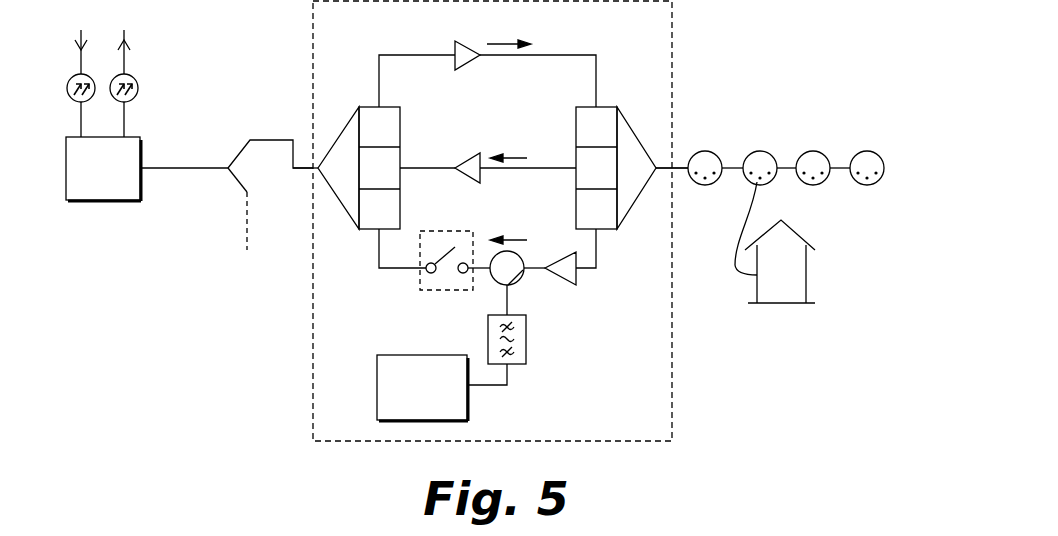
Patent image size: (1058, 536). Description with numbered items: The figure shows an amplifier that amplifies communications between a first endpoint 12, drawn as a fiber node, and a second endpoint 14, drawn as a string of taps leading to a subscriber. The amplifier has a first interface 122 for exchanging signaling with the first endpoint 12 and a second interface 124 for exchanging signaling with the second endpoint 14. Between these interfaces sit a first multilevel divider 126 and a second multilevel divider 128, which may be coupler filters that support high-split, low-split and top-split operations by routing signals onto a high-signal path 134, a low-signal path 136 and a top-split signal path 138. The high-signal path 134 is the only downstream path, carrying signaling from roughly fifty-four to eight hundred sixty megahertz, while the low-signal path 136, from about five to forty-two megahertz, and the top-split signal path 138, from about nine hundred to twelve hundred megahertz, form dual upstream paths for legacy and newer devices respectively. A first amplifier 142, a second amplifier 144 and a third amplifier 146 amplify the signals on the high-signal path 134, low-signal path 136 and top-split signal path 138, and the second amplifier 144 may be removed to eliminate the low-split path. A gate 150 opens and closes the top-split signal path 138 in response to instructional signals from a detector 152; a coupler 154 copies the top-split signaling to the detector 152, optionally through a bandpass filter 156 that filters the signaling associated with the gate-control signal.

The first endpoint 12 is at (216, 56).
The second endpoint 14 is at (776, 60).
The first interface 122 is at (312, 165).
The second interface 124 is at (673, 165).
The first multilevel divider 126 is at (379, 105).
The second multilevel divider 128 is at (600, 105).
The high-signal path 134 is at (502, 44).
The low-signal path 136 is at (512, 158).
The top-split signal path 138 is at (512, 240).
The first amplifier 142 is at (455, 48).
The second amplifier 144 is at (470, 157).
The third amplifier 146 is at (577, 282).
The gate 150 is at (433, 292).
The detector 152 is at (377, 385).
The coupler 154 is at (518, 282).
The bandpass filter 156 is at (526, 337).